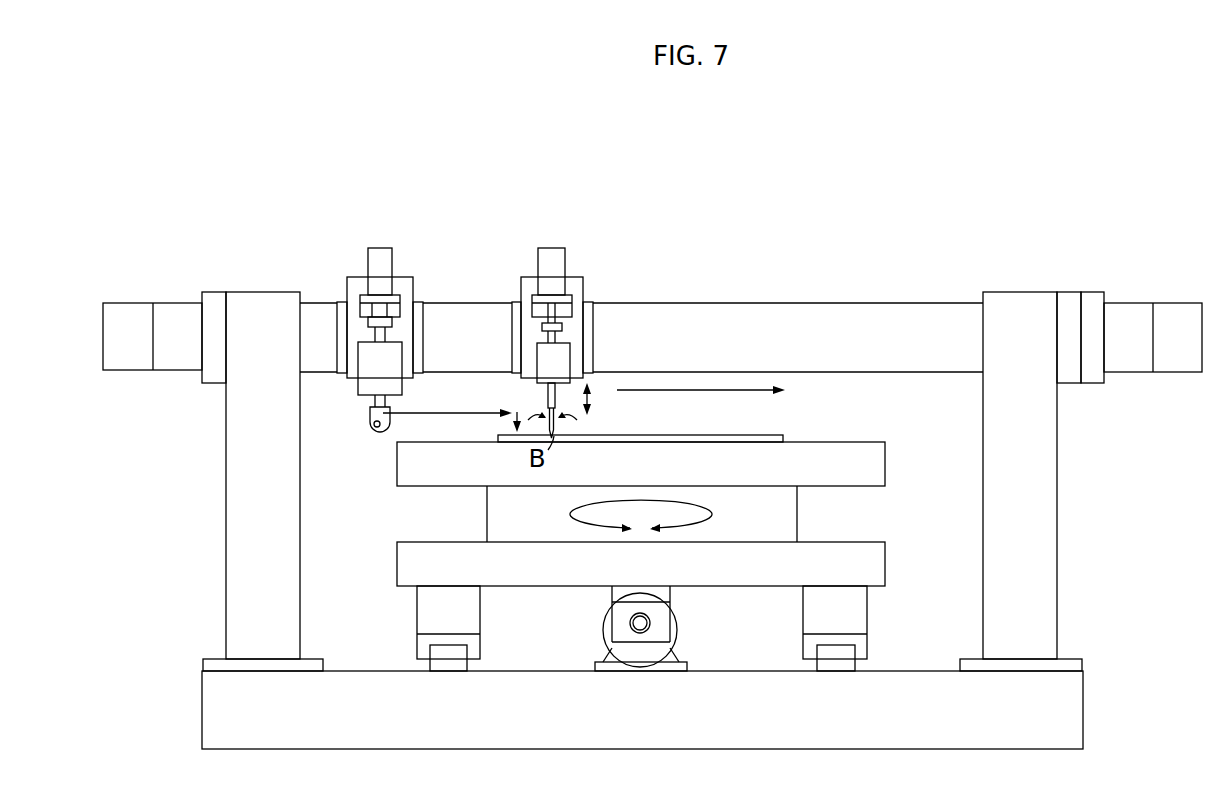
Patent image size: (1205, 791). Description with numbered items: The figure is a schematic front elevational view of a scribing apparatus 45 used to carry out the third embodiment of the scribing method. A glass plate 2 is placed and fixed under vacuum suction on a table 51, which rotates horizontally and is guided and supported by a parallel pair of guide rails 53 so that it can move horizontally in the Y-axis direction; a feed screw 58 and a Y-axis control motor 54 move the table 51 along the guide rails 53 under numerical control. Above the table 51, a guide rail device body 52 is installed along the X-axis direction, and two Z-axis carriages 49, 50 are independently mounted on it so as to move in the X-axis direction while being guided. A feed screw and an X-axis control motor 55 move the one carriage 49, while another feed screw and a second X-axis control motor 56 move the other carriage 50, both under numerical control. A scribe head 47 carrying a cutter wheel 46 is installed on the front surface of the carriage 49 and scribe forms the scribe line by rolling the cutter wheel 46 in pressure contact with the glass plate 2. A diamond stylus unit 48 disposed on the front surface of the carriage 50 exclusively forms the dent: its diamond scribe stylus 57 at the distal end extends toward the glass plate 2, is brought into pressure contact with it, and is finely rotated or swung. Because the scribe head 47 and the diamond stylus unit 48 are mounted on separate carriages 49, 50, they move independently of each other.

The scribing apparatus 45 is at (1042, 274).
The X-axis control motor 55 is at (130, 322).
The X-axis control motor 56 is at (1130, 310).
The guide rail device body 52 is at (784, 320).
The scribe head 47 is at (368, 362).
The carriage 49 is at (403, 325).
The cutter wheel 46 is at (372, 432).
The diamond stylus unit 48 is at (548, 362).
The carriage 50 is at (573, 325).
The diamond scribe stylus 57 is at (558, 424).
The glass plate 2 is at (716, 437).
The table 51 is at (833, 460).
The guide rails 53 is at (448, 662).
The Y-axis control motor 54 is at (636, 650).
The feed screw 58 is at (643, 630).